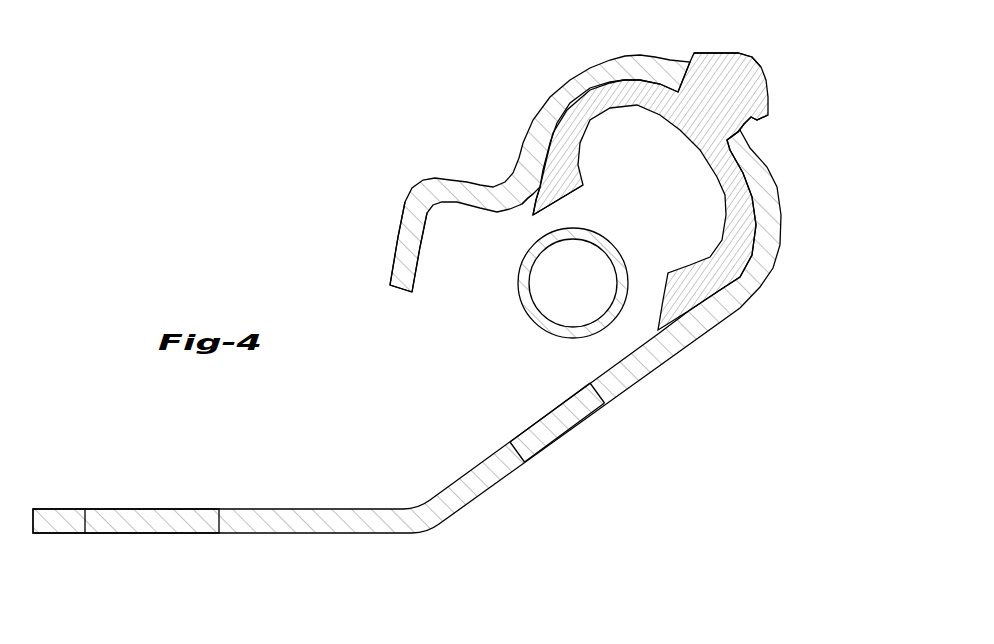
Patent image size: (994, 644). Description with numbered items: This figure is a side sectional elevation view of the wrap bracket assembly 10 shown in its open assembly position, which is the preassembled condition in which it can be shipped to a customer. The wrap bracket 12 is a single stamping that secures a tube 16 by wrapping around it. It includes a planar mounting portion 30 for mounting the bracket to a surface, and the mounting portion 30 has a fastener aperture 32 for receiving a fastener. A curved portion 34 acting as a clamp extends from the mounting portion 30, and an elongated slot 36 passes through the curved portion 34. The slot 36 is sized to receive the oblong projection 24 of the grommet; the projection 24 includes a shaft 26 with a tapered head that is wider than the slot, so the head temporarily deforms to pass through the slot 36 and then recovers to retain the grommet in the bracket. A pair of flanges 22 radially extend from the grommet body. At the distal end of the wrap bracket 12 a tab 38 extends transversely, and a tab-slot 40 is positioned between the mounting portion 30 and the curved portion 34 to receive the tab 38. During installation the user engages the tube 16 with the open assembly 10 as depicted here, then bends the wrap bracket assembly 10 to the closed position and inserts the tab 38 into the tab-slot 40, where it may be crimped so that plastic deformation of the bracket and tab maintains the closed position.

The wrap bracket assembly 10 is at (226, 193).
The wrap bracket 12 is at (462, 185).
The tube 16 is at (606, 239).
The flanges 22 is at (534, 204).
The oblong projection 24 is at (757, 66).
The shaft 26 is at (720, 73).
The mounting portion 30 is at (60, 509).
The fastener aperture 32 is at (150, 509).
The curved portion 34 is at (784, 217).
The elongated slot 36 is at (733, 138).
The tab 38 is at (393, 257).
The tab-slot 40 is at (598, 390).